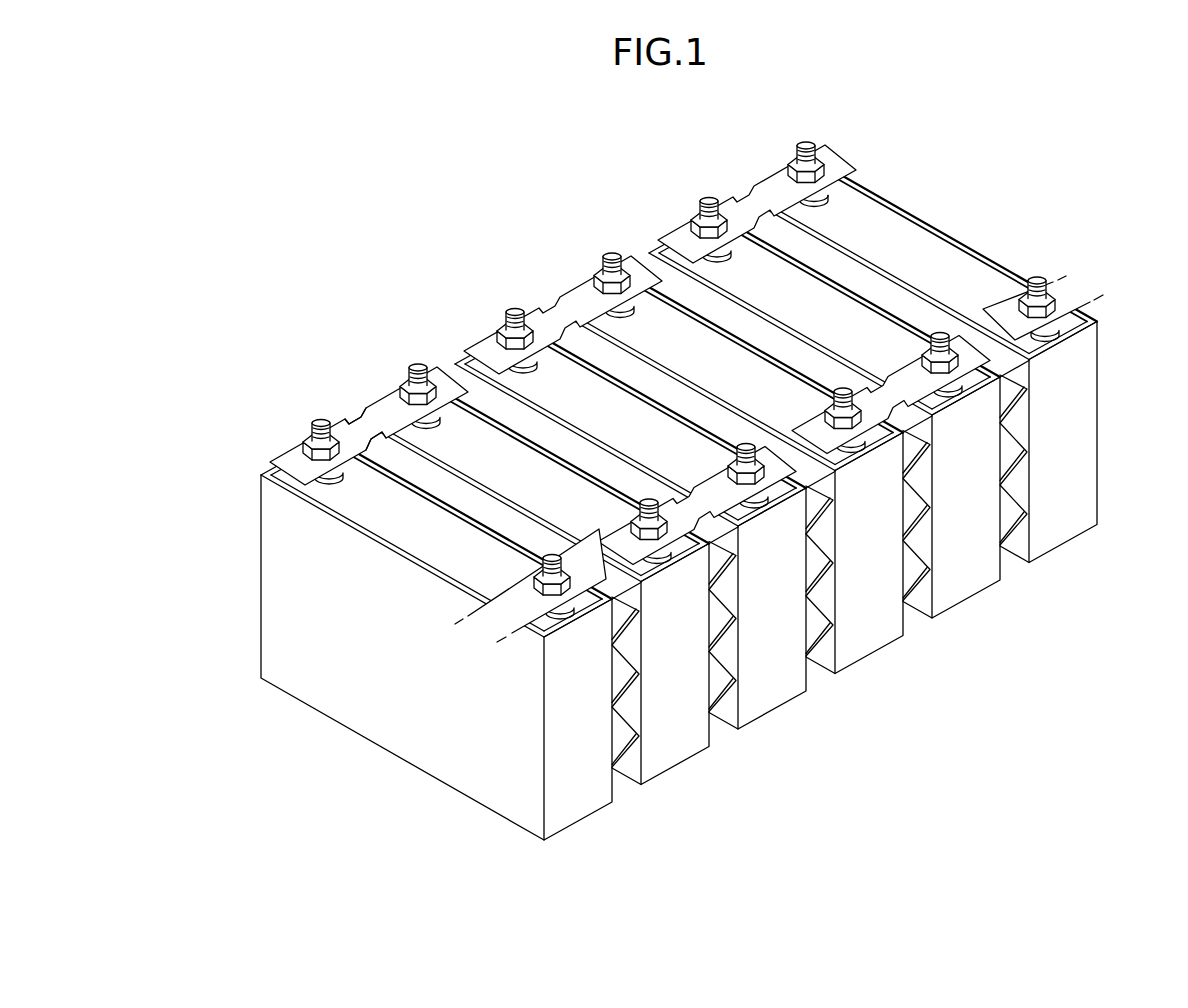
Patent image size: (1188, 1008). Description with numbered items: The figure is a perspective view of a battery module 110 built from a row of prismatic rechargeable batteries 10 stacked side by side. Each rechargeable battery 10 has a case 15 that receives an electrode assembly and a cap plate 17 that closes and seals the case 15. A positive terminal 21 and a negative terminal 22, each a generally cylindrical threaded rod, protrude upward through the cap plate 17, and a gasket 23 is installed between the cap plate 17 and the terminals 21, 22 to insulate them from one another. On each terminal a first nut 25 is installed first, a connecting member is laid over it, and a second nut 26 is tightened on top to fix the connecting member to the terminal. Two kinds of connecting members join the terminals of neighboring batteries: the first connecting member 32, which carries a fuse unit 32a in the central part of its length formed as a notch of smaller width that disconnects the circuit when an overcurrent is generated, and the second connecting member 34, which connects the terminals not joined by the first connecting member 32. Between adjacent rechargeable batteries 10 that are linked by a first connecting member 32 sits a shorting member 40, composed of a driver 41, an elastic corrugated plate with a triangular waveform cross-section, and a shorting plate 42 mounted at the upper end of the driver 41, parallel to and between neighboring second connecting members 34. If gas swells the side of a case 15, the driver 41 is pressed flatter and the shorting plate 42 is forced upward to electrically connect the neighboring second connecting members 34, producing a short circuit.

The battery module 110 is at (643, 486).
The rechargeable battery 10 is at (457, 658).
The case 15 is at (378, 728).
The cap plate 17 is at (938, 255).
The positive terminal 21 is at (316, 422).
The negative terminal 22 is at (413, 363).
The gasket 23 is at (847, 210).
The first nut 25 is at (823, 197).
The second nut 26 is at (304, 441).
The first connecting member 32 is at (325, 399).
The fuse unit 32a is at (353, 413).
The second connecting member 34 is at (703, 508).
The shorting member 40 is at (856, 599).
The driver 41 is at (827, 625).
The shorting plate 42 is at (832, 469).